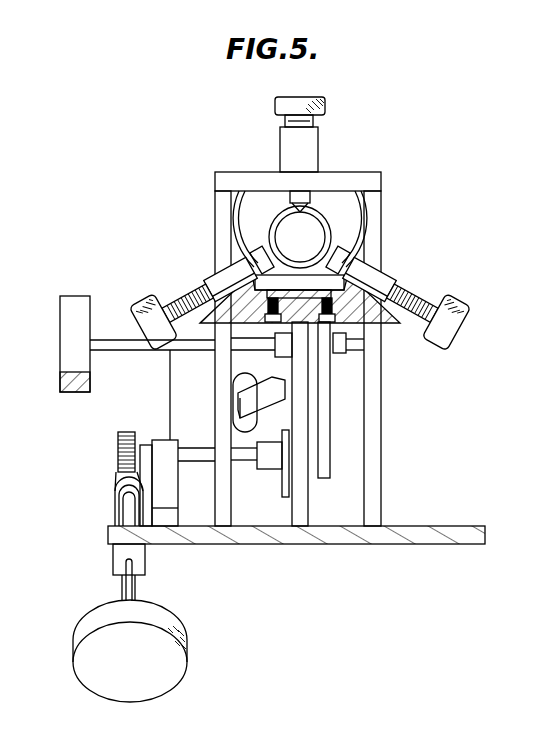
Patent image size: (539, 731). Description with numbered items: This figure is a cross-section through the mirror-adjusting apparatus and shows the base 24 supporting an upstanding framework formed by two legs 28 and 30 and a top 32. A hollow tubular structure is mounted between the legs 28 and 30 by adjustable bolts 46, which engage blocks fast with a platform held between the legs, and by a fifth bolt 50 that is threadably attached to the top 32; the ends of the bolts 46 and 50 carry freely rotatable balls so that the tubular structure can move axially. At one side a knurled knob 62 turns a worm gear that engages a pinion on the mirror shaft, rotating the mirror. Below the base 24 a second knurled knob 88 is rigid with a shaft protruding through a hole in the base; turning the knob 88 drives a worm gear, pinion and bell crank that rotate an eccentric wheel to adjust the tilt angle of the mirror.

The base 24 is at (312, 531).
The leg 28 is at (231, 208).
The leg 30 is at (372, 210).
The top 32 is at (330, 186).
The adjustable bolt 46 is at (173, 297).
The fifth bolt 50 is at (320, 121).
The knurled knob 62 is at (60, 380).
The knurled knob 88 is at (162, 672).